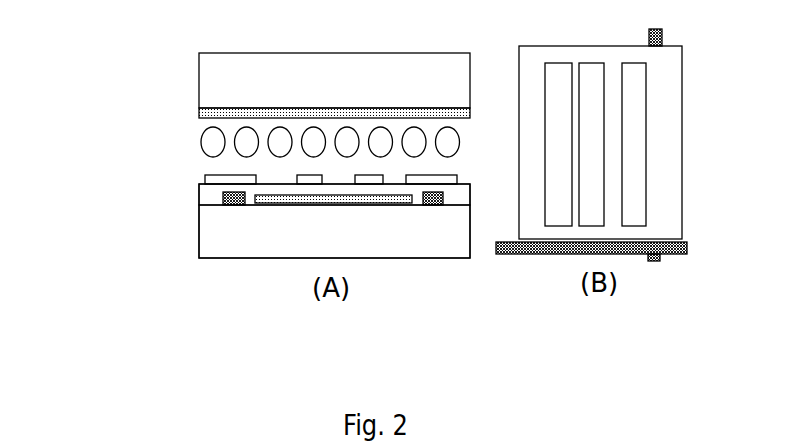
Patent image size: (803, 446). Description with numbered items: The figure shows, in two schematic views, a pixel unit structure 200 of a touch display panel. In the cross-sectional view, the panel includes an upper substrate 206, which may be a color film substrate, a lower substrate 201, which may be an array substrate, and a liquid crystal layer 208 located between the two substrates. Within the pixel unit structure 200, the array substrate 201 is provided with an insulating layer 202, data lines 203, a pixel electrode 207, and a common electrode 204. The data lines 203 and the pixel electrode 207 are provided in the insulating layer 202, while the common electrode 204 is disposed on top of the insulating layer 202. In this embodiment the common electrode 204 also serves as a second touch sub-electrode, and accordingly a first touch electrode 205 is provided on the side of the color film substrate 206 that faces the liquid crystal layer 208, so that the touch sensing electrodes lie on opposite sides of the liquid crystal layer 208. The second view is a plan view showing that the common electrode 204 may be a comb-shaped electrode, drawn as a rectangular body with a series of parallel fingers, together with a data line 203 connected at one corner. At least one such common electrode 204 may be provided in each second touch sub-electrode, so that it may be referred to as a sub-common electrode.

The pixel unit structure 200 is at (412, 260).
The lower substrate 201 is at (199, 239).
The insulating layer 202 is at (199, 198).
The data lines 203 is at (223, 193).
The common electrode 204 is at (220, 174).
The first touch electrode 205 is at (199, 110).
The upper substrate 206 is at (199, 80).
The pixel electrode 207 is at (388, 195).
The liquid crystal layer 208 is at (204, 141).